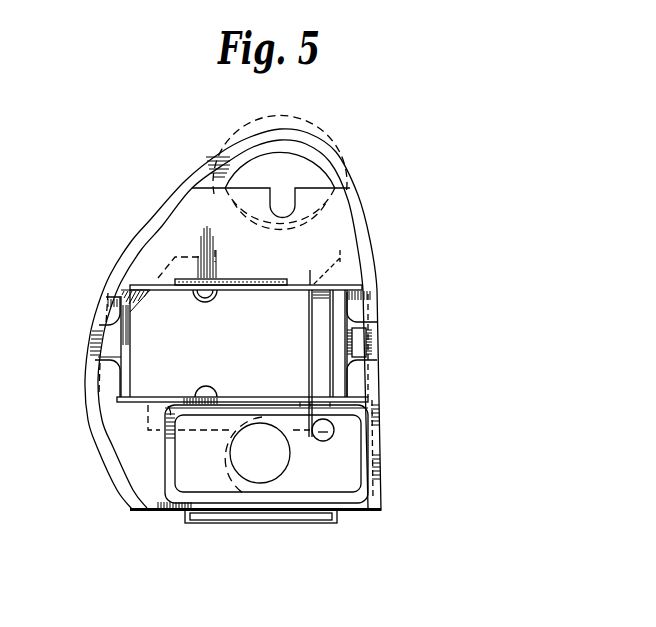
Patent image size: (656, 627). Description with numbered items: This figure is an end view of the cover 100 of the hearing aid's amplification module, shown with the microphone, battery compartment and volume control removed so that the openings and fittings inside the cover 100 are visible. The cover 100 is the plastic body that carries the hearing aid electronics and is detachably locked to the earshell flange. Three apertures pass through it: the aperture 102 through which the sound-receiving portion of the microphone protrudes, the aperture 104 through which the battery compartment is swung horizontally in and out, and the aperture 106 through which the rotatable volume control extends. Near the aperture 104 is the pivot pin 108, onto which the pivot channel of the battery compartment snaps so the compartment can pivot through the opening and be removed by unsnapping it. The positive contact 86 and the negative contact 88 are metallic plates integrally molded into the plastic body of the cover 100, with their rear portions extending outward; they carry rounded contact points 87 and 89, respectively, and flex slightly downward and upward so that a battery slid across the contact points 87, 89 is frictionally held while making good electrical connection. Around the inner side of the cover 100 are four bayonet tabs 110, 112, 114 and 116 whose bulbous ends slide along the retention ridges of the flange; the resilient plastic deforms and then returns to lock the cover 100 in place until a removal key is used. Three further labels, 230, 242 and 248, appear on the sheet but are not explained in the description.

The positive contact 86 is at (170, 407).
The rounded contact point 87 is at (211, 387).
The negative contact 88 is at (183, 277).
The rounded contact point 89 is at (206, 300).
The cover 100 is at (134, 201).
The aperture 102 is at (275, 473).
The aperture 104 is at (160, 373).
The aperture 106 is at (316, 178).
The pivot pin 108 is at (323, 347).
The bayonet tab 110 is at (100, 305).
The bayonet tab 112 is at (373, 307).
The bayonet tab 114 is at (90, 380).
The bayonet tab 116 is at (372, 375).
The lead 230 is at (0, 15).
The lead 242 is at (0, 160).
The spacer 248 is at (0, 338).